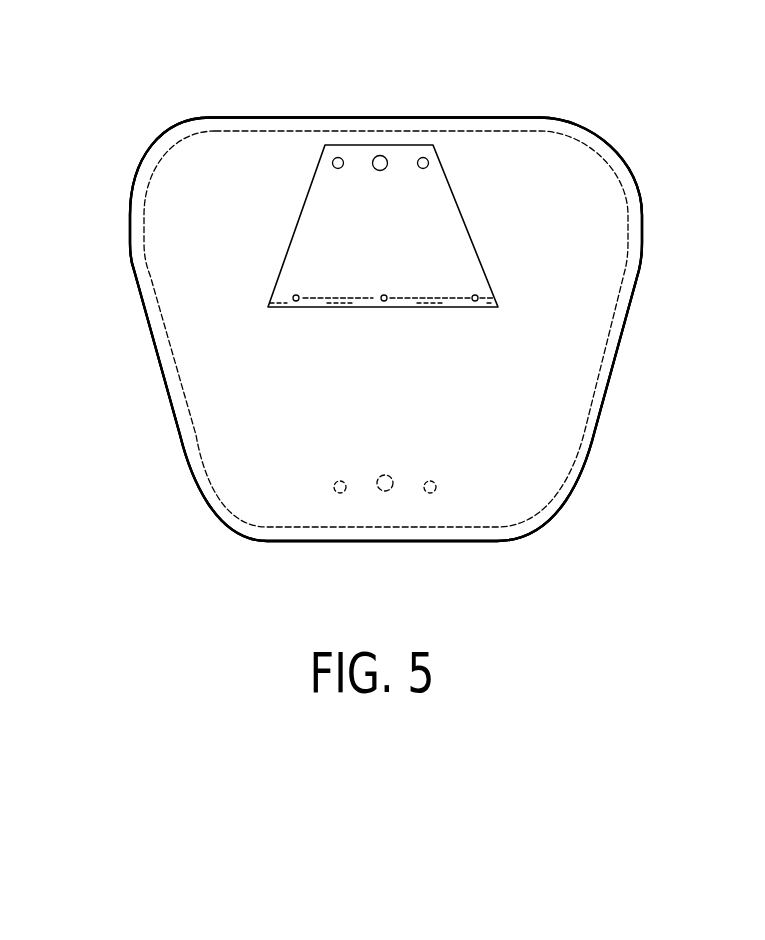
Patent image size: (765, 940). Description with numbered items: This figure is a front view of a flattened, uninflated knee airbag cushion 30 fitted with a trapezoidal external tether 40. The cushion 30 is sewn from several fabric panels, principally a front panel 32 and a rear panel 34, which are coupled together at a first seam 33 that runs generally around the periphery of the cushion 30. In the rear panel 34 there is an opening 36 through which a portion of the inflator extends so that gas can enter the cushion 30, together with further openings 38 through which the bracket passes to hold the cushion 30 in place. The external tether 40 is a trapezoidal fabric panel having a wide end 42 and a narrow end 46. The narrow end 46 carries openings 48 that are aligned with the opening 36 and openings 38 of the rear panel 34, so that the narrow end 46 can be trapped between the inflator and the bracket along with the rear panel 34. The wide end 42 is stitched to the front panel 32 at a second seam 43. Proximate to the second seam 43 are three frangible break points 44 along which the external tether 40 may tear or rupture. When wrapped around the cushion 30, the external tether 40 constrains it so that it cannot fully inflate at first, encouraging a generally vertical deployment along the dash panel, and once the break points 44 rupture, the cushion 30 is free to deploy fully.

The knee airbag cushion 30 is at (577, 82).
The front panel 32 is at (605, 183).
The first seam 33 is at (628, 254).
The rear panel 34 is at (126, 203).
The opening 36 is at (383, 494).
The openings 38 is at (341, 494).
The external tether 40 is at (430, 188).
The wide end 42 is at (418, 307).
The second seam 43 is at (335, 303).
The break points 44 is at (299, 295).
The narrow end 46 is at (393, 150).
The openings 48 is at (376, 154).